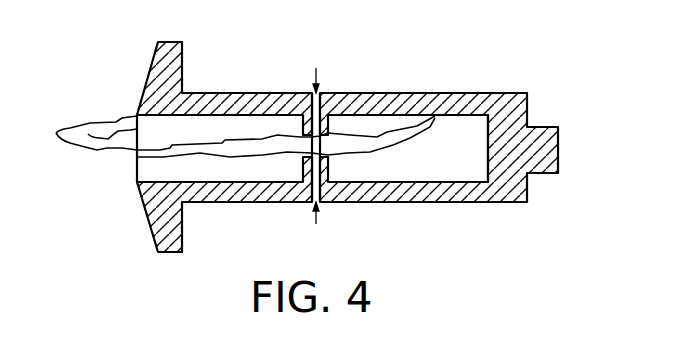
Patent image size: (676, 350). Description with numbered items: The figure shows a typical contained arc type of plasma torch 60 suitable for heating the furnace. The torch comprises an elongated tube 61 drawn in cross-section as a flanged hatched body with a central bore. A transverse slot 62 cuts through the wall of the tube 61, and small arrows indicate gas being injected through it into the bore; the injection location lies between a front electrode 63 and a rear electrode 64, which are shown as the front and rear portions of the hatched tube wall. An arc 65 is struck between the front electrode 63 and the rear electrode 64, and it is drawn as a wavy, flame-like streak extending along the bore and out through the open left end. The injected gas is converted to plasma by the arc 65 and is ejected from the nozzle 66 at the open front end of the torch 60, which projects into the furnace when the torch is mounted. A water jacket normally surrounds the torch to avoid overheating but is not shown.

The plasma torch 60 is at (306, 134).
The elongated tube 61 is at (393, 98).
The transverse slot 62 is at (309, 91).
The front electrode 63 is at (263, 195).
The rear electrode 64 is at (442, 106).
The arc 65 is at (90, 123).
The nozzle 66 is at (135, 183).